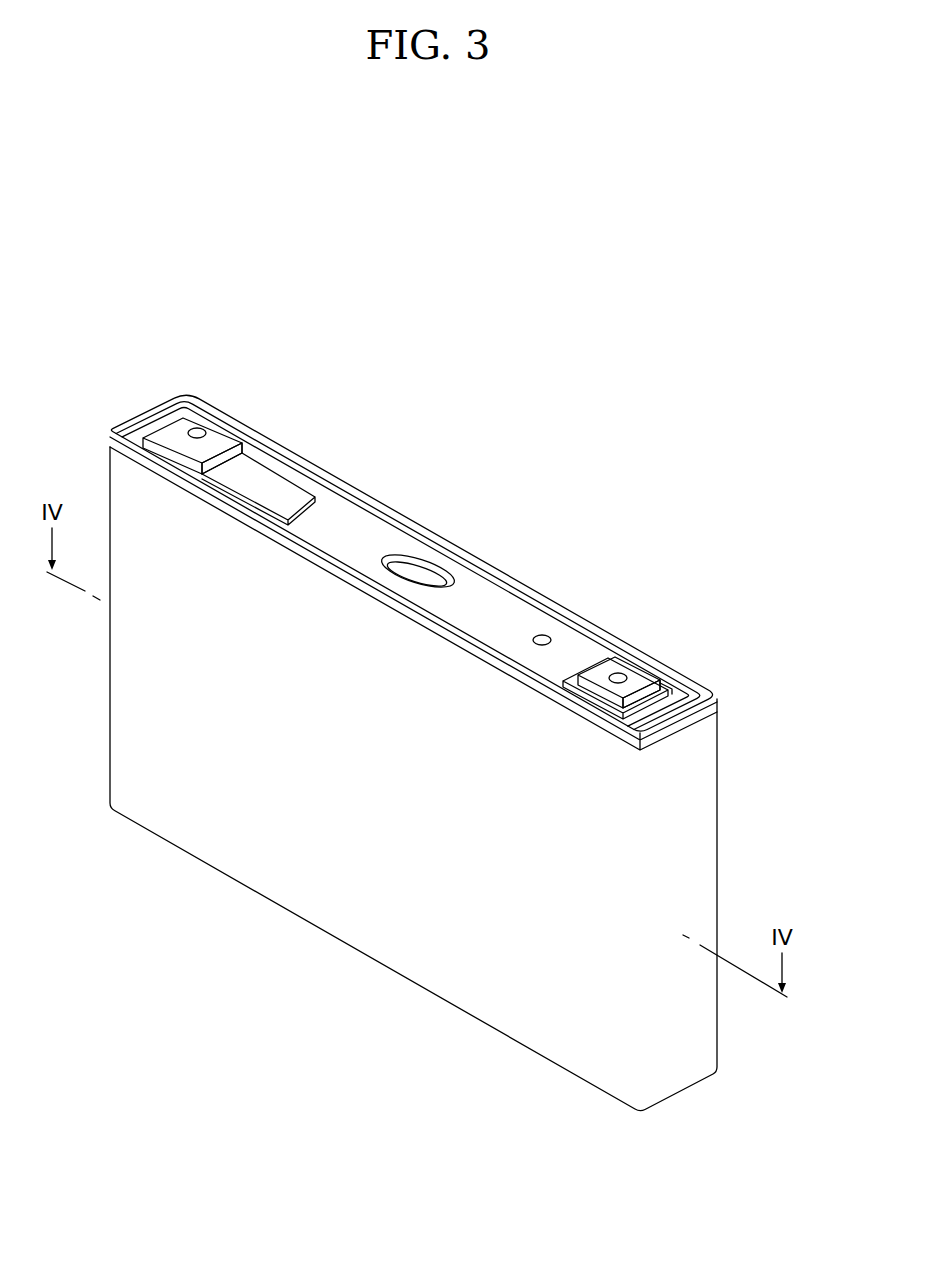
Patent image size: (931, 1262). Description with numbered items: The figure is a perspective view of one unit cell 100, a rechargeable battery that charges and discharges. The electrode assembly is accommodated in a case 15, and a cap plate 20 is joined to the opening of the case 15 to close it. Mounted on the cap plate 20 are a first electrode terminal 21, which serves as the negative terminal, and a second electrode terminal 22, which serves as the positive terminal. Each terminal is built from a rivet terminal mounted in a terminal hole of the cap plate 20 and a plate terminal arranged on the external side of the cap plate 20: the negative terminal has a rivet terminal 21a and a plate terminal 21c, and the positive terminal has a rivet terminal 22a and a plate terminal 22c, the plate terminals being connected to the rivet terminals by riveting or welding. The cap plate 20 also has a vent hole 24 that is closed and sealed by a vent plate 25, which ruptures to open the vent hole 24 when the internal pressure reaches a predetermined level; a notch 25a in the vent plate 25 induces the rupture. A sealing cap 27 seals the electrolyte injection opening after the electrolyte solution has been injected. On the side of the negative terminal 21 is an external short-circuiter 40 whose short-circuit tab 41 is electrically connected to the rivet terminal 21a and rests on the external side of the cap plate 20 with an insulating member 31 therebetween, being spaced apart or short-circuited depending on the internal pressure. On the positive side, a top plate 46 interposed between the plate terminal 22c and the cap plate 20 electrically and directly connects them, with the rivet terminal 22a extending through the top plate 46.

The unit cell 100 is at (540, 425).
The case 15 is at (330, 900).
The cap plate 20 is at (358, 522).
The first electrode terminal 21 is at (205, 424).
The rivet terminal 21a is at (188, 430).
The plate terminal 21c is at (238, 450).
The second electrode terminal 22 is at (623, 657).
The rivet terminal 22a is at (628, 678).
The plate terminal 22c is at (632, 690).
The vent hole 24 is at (418, 563).
The vent plate 25 is at (433, 578).
The notch 25a is at (437, 590).
The sealing cap 27 is at (544, 636).
The insulating member 31 is at (262, 450).
The external short-circuiter 40 is at (296, 450).
The short-circuit tab 41 is at (300, 490).
The top plate 46 is at (638, 708).